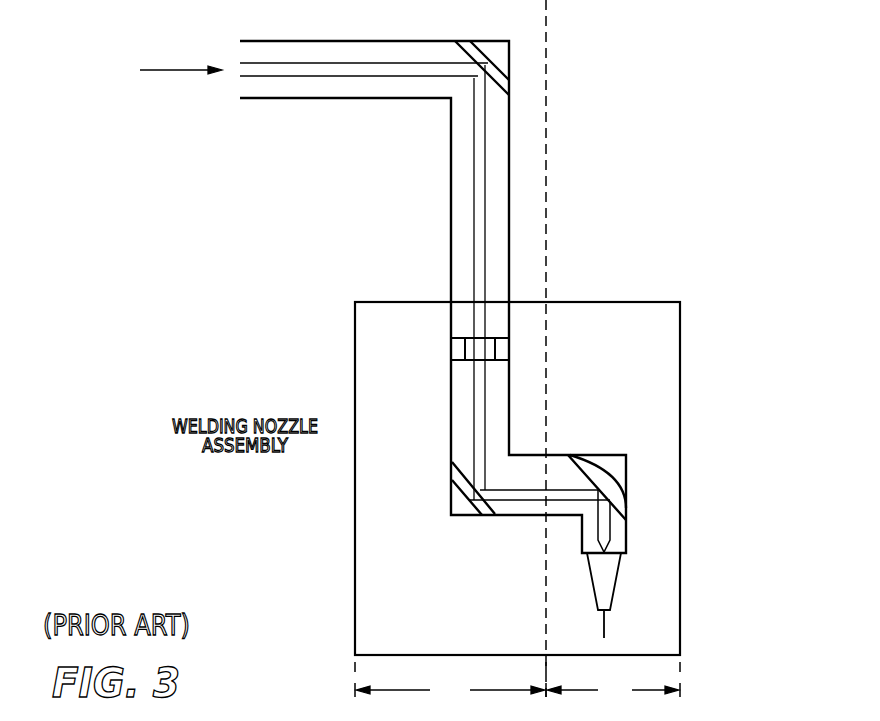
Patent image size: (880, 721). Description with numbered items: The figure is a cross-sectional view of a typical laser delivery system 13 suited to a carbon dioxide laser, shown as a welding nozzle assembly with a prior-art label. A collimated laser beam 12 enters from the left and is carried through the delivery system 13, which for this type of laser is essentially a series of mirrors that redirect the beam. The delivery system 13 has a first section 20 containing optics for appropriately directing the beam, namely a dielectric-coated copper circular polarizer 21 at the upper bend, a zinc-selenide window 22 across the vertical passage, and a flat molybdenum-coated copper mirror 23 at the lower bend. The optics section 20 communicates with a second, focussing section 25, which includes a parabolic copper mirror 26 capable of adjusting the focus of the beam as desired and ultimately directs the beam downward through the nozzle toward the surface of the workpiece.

The collimated beam 12 is at (163, 70).
The delivery system 13 is at (372, 191).
The first section 20 is at (450, 682).
The dielectric-coated copper circular polarizer 21 is at (488, 67).
The zinc-selenide window 22 is at (451, 347).
The flat molybdenum-coated copper mirror 23 is at (451, 515).
The focussing section 25 is at (613, 682).
The parabolic copper mirror 26 is at (603, 478).